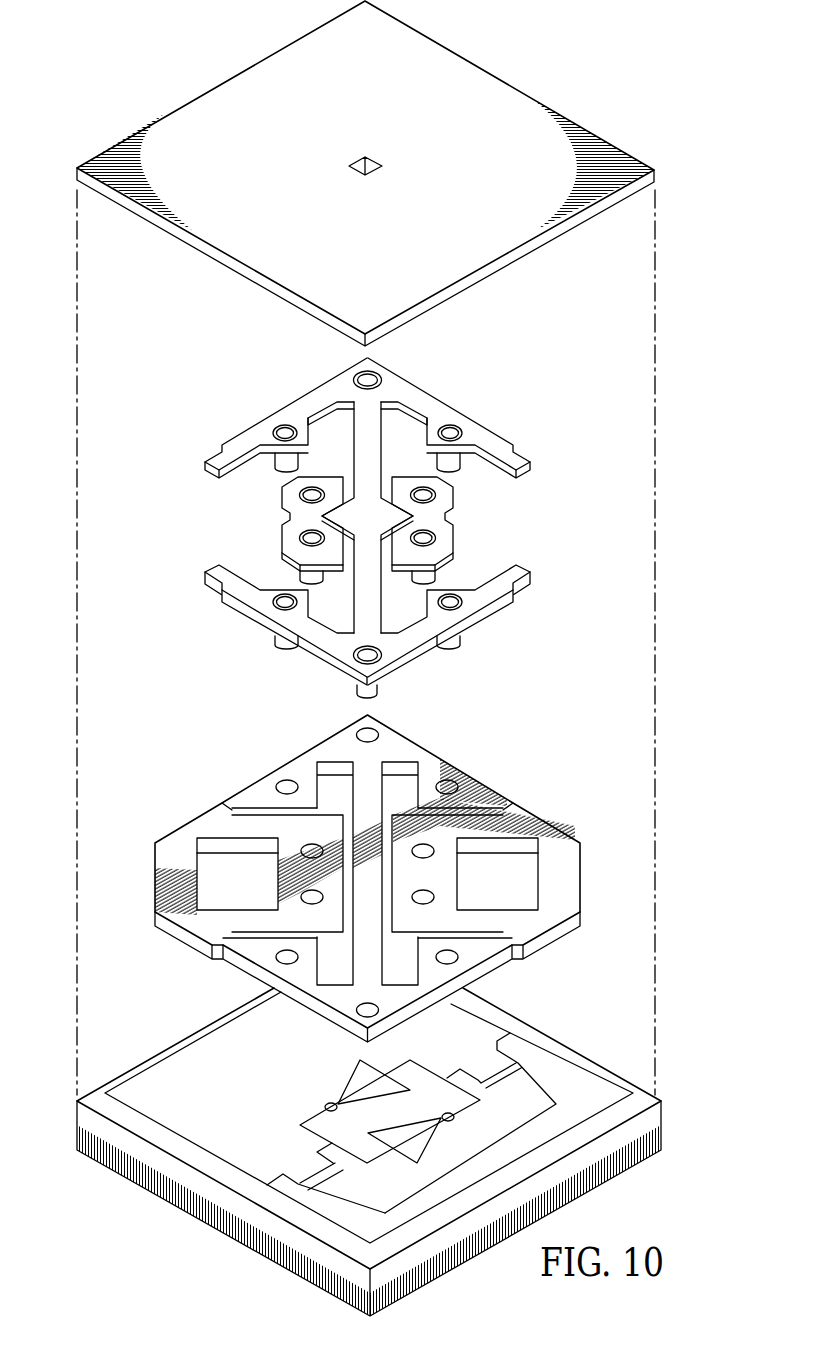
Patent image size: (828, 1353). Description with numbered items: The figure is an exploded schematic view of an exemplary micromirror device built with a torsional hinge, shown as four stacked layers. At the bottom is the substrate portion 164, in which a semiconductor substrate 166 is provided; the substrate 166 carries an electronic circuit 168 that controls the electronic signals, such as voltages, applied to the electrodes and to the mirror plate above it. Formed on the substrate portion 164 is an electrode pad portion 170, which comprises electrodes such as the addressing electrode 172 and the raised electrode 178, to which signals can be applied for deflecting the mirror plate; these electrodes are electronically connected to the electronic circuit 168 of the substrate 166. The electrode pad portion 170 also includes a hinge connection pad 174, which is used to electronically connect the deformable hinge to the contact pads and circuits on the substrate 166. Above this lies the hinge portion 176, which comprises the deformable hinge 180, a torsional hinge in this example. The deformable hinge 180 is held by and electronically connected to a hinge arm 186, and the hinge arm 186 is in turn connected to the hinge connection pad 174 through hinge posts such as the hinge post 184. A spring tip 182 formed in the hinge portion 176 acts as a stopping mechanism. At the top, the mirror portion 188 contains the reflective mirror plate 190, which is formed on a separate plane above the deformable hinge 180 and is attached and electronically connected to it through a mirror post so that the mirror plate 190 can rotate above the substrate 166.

The substrate portion 164 is at (369, 1138).
The substrate 166 is at (202, 1207).
The electronic circuit 168 is at (305, 1073).
The electrode pad portion 170 is at (368, 878).
The addressing electrode 172 is at (185, 828).
The hinge connection pad 174 is at (265, 783).
The hinge portion 176 is at (367, 527).
The raised electrode 178 is at (288, 498).
The deformable hinge 180 is at (352, 620).
The spring tip 182 is at (497, 583).
The hinge post 184 is at (357, 684).
The hinge arm 186 is at (305, 405).
The mirror portion 188 is at (540, 67).
The reflective mirror plate 190 is at (223, 90).